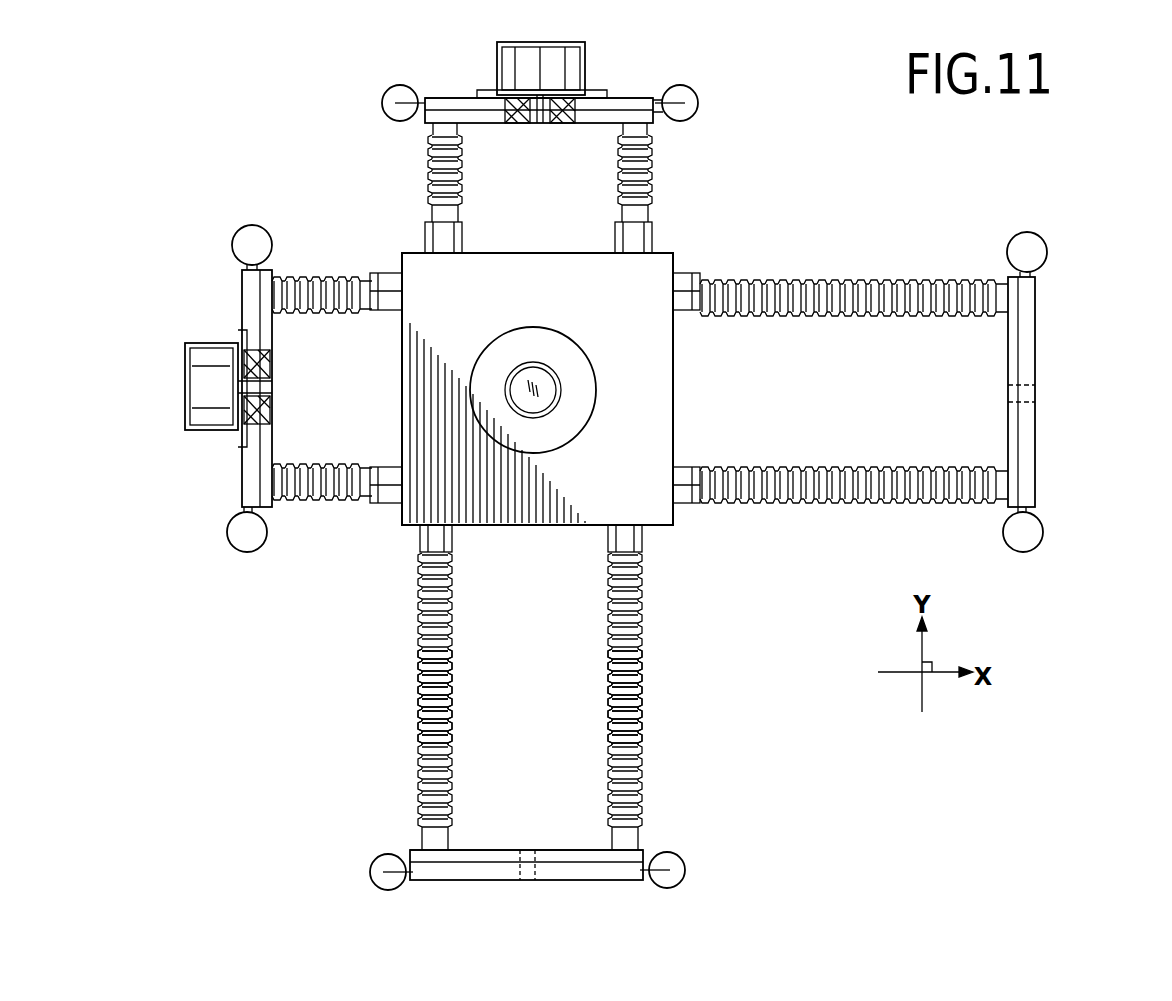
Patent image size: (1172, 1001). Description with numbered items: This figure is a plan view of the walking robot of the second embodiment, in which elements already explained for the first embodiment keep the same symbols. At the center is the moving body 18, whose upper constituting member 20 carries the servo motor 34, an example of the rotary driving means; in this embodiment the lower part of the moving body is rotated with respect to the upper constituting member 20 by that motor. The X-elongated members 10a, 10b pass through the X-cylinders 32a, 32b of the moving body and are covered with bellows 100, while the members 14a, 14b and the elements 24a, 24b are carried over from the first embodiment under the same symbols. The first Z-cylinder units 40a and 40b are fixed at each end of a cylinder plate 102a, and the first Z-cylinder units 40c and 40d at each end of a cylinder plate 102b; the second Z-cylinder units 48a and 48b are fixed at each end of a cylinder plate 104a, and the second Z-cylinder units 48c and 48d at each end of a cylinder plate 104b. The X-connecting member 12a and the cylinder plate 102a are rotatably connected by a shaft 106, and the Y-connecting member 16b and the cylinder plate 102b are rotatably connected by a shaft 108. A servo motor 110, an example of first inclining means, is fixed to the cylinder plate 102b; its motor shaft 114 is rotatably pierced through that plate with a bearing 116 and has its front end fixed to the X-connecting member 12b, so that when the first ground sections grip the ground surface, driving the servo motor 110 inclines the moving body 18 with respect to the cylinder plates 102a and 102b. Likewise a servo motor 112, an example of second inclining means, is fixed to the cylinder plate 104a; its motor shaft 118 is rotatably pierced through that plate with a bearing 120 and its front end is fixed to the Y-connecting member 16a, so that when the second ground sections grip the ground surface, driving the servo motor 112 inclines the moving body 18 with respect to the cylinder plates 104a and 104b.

The X-elongated member 10a is at (1002, 290).
The X-elongated member 10b is at (1000, 488).
The X-connecting member 12a is at (1015, 330).
The X-connecting member 12b is at (265, 302).
The Y-axis threaded rod 14a is at (645, 830).
The Y-axis threaded rod 14b is at (420, 830).
The Y-connecting member 16a is at (602, 110).
The Y-connecting member 16b is at (578, 858).
The moving body 18 is at (683, 405).
The upper constituting member 20 is at (420, 498).
The nut 24a is at (647, 234).
The nut 24b is at (428, 238).
The X-cylinder 32a is at (683, 508).
The X-cylinder 32b is at (690, 285).
The servo motor 34 is at (585, 405).
The first Z-cylinder unit 40a is at (1025, 252).
The first Z-cylinder unit 40b is at (1020, 530).
The first Z-cylinder unit 40c is at (252, 245).
The first Z-cylinder unit 40d is at (245, 530).
The second Z-cylinder unit 48a is at (698, 104).
The second Z-cylinder unit 48b is at (382, 104).
The second Z-cylinder unit 48c is at (685, 870).
The second Z-cylinder unit 48d is at (370, 872).
The bellows 100 is at (430, 164).
The cylinder plate 102a is at (1022, 350).
The cylinder plate 102b is at (250, 490).
The cylinder plate 104a is at (481, 103).
The cylinder plate 104b is at (470, 870).
The shaft 106 is at (1012, 400).
The shaft 108 is at (530, 860).
The servo motor 110 is at (210, 385).
The servo motor 112 is at (565, 72).
The motor shaft 114 is at (255, 408).
The bearing 116 is at (255, 358).
The motor shaft 118 is at (540, 123).
The bearing 120 is at (525, 98).